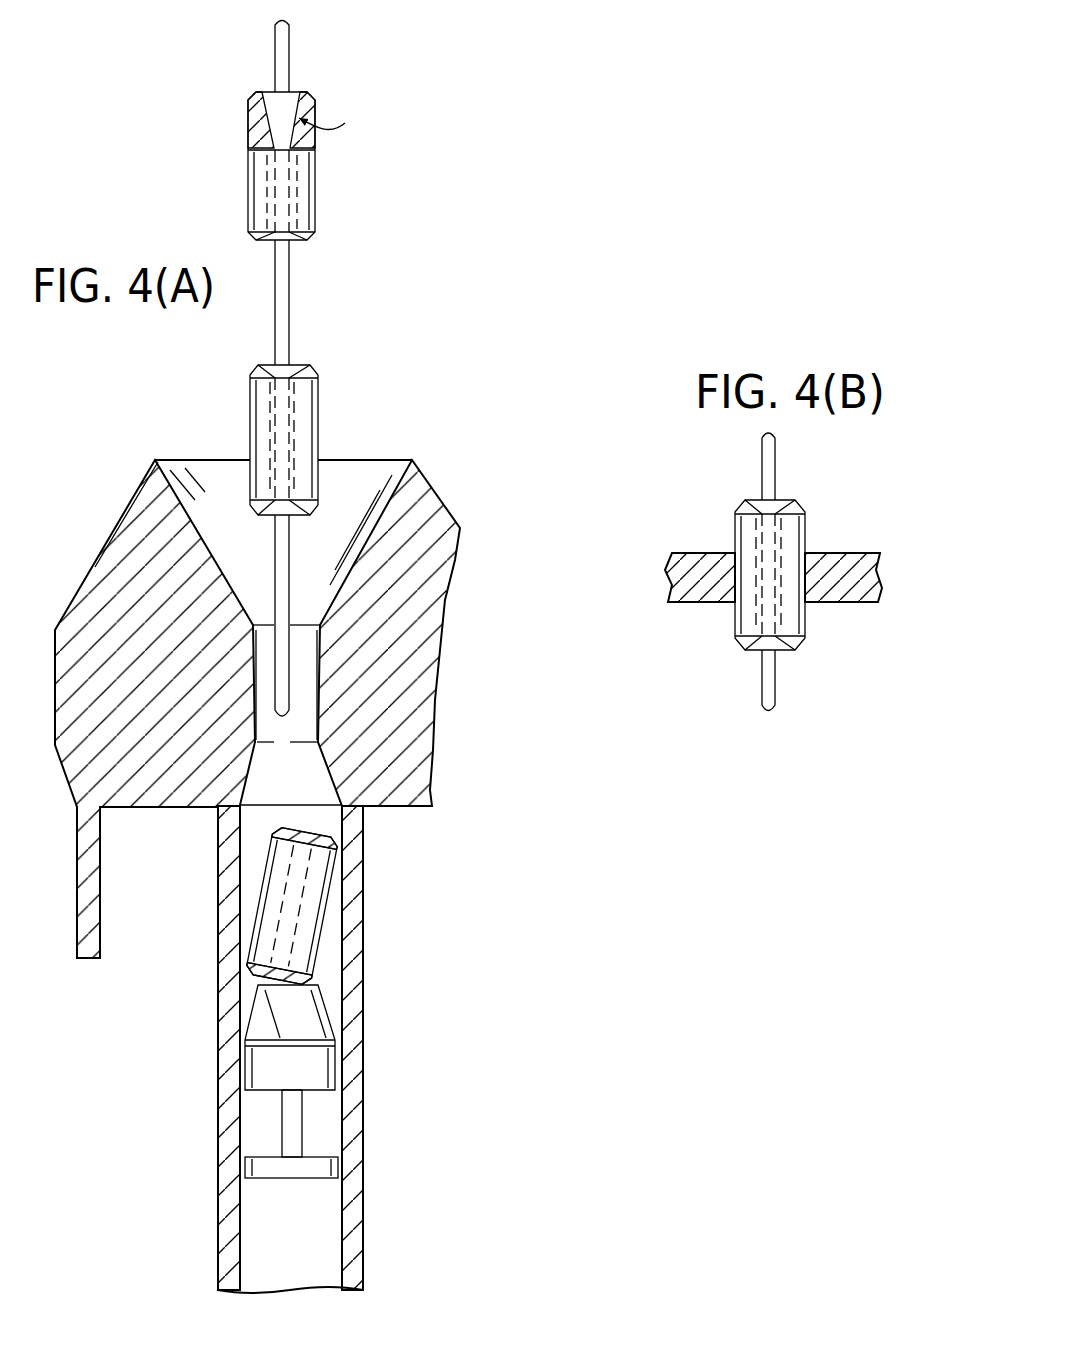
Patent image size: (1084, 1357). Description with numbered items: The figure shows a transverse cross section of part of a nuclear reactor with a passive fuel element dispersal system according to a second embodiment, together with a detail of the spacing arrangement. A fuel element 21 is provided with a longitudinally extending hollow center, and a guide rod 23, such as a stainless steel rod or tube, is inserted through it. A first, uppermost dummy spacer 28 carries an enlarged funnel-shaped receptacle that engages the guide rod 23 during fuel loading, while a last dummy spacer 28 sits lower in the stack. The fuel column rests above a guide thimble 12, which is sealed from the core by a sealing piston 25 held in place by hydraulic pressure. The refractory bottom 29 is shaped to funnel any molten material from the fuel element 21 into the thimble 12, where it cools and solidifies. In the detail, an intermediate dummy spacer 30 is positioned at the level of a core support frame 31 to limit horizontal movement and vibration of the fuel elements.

In FIG. 4A, the guide thimble 12 is at (355, 1200).
In FIG. 4A, the fuel element 21 is at (323, 420).
In FIG. 4A, the guide rod 23 is at (290, 330).
In FIG. 4B, the guide rod 23 is at (770, 480).
In FIG. 4A, the sealing piston 25 is at (325, 1060).
In FIG. 4A, the dummy spacer 28 is at (310, 205).
In FIG. 4A, the refractory bottom 29 is at (180, 487).
In FIG. 4B, the intermediate dummy spacer 30 is at (802, 650).
In FIG. 4B, the core support frame 31 is at (672, 574).